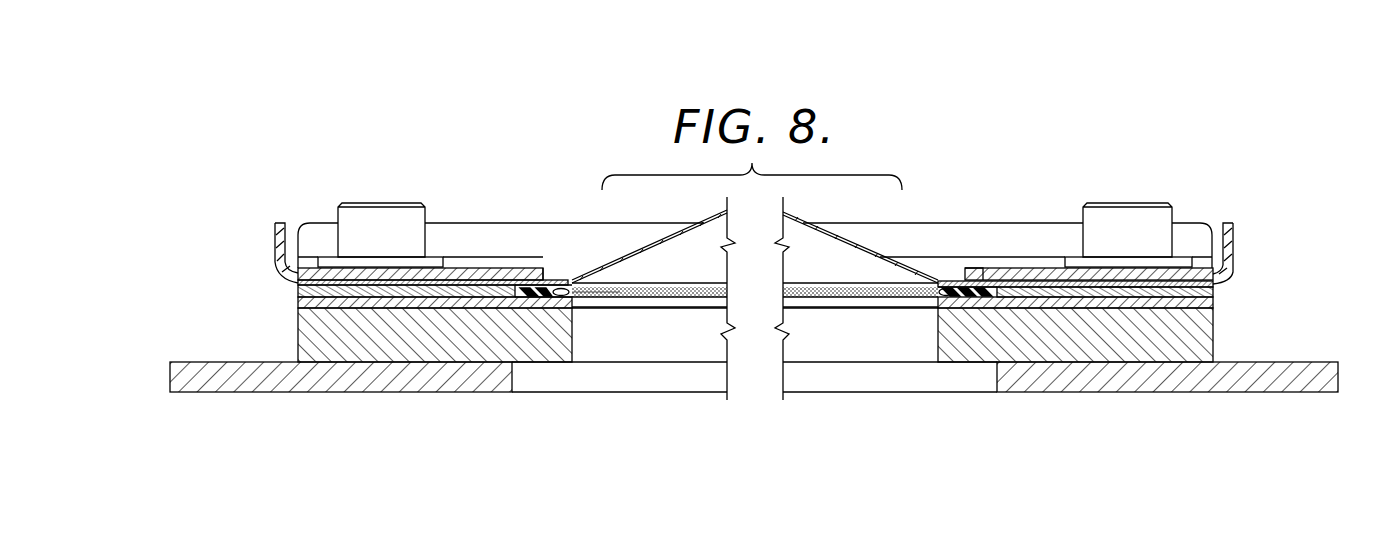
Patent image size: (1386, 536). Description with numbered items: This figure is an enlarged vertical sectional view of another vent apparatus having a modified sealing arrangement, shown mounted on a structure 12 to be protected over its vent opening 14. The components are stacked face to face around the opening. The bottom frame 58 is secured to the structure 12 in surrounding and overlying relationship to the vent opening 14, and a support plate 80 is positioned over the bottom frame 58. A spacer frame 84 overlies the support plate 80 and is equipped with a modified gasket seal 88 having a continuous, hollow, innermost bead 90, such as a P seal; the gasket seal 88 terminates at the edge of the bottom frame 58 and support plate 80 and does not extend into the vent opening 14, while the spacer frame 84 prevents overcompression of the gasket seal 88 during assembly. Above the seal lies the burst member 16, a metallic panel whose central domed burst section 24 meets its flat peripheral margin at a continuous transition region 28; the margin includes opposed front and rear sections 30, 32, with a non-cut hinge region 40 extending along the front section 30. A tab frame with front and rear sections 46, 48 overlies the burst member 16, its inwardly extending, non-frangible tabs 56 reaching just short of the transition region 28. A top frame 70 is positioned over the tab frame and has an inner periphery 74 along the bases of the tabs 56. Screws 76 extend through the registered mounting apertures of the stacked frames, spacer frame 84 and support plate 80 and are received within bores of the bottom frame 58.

The structure 12 is at (1253, 380).
The vent opening 14 is at (685, 350).
The burst member 16 is at (713, 212).
The central domed burst section 24 is at (853, 246).
The transition region 28 is at (572, 290).
The front section 30 is at (1125, 283).
The rear section 32 is at (492, 296).
The hinge region 40 is at (988, 268).
The front section of tab frame 46 is at (1075, 220).
The rear section of tab frame 48 is at (466, 275).
The tabs 56 is at (561, 288).
The bottom frame 58 is at (1200, 340).
The top frame 70 is at (1233, 234).
The inner periphery 74 is at (551, 282).
The screws 76 is at (400, 212).
The support plate 80 is at (300, 300).
The spacer frame 84 is at (300, 290).
The gasket seal 88 is at (540, 297).
The innermost bead 90 is at (600, 293).